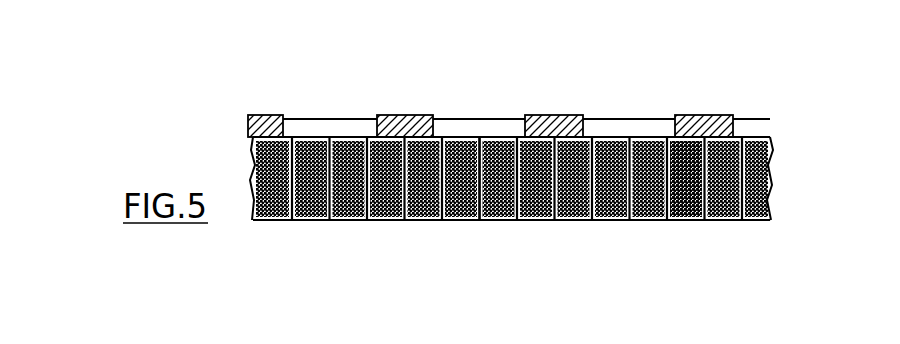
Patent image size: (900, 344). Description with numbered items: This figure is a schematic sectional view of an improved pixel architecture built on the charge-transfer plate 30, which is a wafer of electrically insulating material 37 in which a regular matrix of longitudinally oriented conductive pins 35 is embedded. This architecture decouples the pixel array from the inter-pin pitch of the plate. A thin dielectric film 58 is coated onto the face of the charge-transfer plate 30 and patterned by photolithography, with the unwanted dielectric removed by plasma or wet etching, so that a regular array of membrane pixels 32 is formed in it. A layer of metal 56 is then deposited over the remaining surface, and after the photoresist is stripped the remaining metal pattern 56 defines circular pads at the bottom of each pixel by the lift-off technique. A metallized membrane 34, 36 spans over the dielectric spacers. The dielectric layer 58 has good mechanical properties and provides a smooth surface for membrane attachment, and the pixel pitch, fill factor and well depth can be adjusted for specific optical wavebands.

The charge-transfer plate 30 is at (777, 232).
The membrane pixels 32 is at (650, 123).
The membrane 34 is at (452, 118).
The metallization layer 36 is at (419, 99).
The conductive pins 35 is at (480, 222).
The electrically insulating material 37 is at (685, 212).
The layer of metal 56 is at (332, 136).
The dielectric film 58 is at (401, 116).